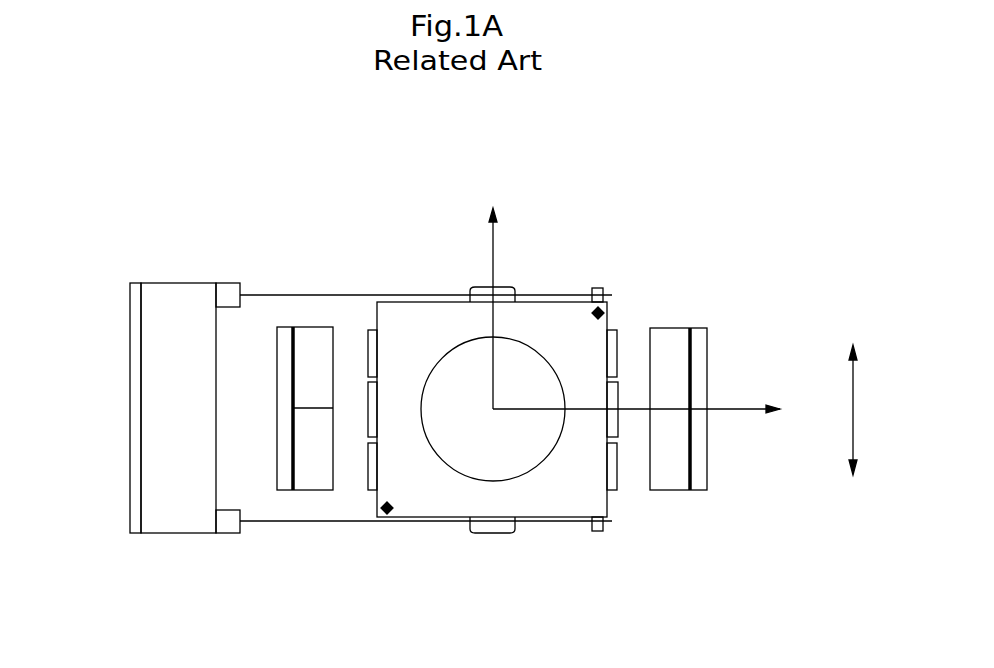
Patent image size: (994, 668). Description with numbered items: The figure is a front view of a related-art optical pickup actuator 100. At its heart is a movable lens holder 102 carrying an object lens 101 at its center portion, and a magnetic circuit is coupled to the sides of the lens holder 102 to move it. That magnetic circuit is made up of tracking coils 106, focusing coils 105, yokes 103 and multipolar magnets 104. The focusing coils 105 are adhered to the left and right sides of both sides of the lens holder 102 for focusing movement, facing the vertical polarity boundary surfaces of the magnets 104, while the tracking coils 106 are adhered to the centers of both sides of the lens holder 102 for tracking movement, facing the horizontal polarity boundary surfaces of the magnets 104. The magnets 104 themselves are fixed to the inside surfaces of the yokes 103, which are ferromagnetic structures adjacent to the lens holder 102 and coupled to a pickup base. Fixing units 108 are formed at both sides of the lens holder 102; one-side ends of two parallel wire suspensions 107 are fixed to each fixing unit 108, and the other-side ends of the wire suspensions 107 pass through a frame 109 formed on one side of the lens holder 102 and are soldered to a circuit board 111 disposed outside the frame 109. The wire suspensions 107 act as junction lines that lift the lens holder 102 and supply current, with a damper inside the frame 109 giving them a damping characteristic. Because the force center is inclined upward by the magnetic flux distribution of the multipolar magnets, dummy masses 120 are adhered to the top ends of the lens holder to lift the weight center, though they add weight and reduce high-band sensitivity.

The optical pickup actuator 100 is at (702, 160).
The object lens 101 is at (507, 370).
The lens holder 102 is at (572, 483).
The yokes 103 is at (288, 325).
The multipolar magnets 104 is at (313, 327).
The focusing coils 105 is at (617, 335).
The tracking coils 106 is at (618, 395).
The wire suspensions 107 is at (282, 523).
The fixing units 108 is at (497, 528).
The frame 109 is at (152, 412).
The circuit board 111 is at (130, 462).
The dummy mass 120 is at (607, 304).